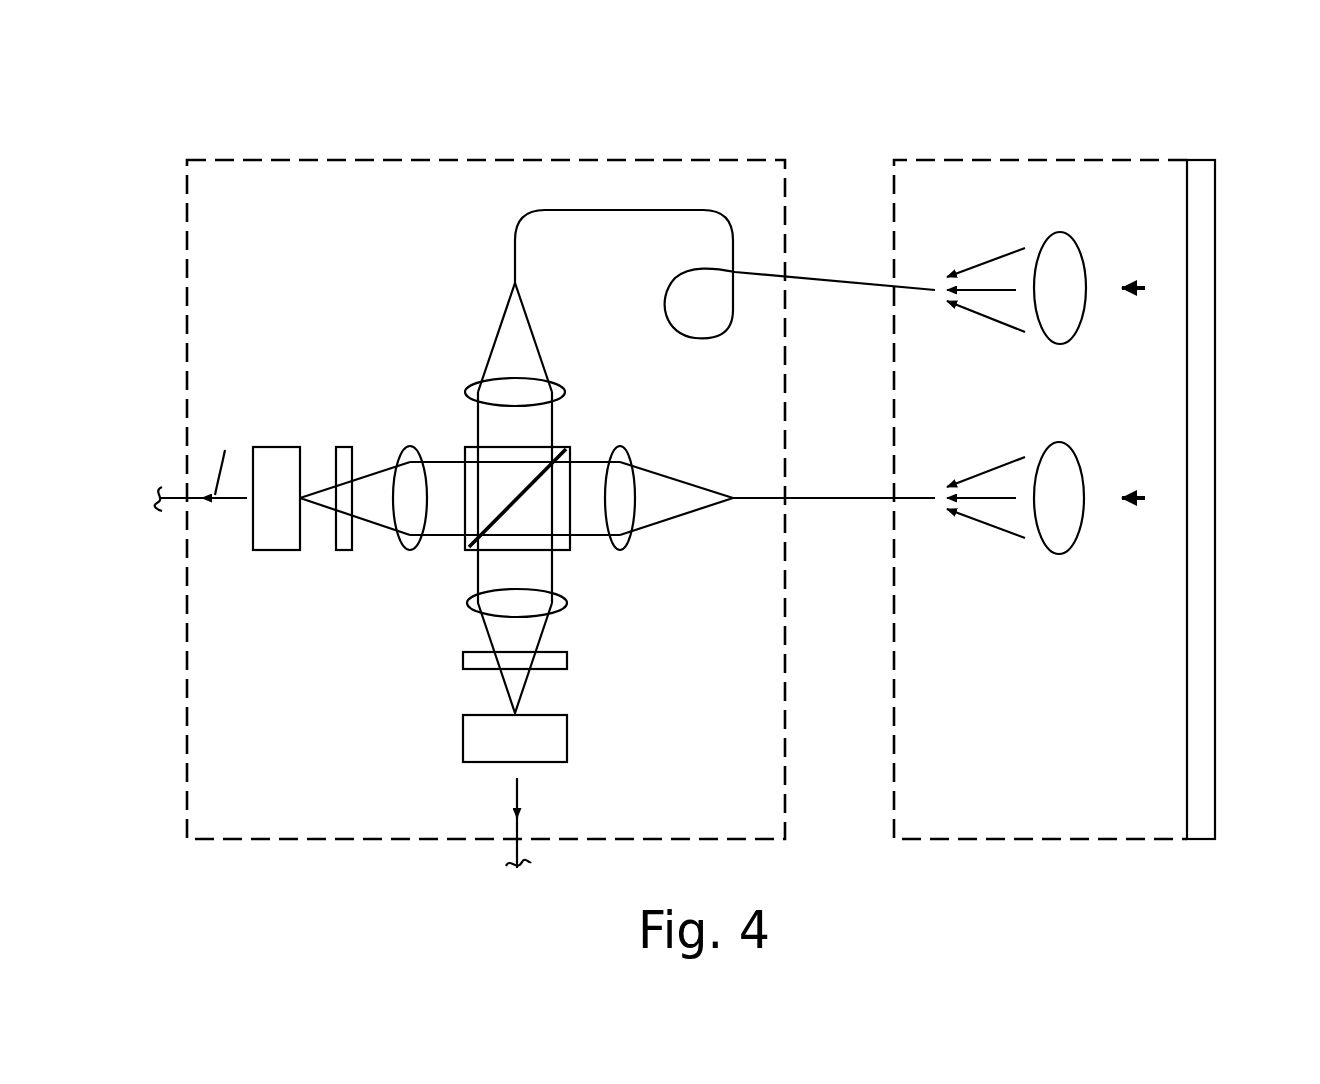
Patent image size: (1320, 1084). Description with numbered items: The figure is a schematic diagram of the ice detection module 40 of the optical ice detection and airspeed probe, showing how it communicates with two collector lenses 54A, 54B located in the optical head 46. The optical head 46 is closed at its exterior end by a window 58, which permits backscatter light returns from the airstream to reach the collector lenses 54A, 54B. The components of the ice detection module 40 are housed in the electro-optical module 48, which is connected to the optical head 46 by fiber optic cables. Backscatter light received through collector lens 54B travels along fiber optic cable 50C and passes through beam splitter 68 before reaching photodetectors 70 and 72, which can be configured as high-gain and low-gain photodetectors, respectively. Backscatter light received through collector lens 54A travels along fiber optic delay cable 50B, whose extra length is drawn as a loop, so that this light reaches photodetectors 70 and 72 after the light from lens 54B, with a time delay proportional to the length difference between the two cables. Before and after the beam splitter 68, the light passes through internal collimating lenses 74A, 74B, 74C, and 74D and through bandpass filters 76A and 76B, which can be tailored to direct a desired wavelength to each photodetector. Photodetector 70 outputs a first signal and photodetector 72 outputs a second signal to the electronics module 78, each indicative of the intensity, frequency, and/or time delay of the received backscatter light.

The ice detection module 40 is at (381, 298).
The optical head 46 is at (1052, 132).
The electro-optical module 48 is at (435, 132).
The fiber optic delay cable 50B is at (818, 277).
The fiber optic cable 50C is at (812, 497).
The collector lens 54A is at (1068, 236).
The collector lens 54B is at (1068, 446).
The window 58 is at (1215, 628).
The beam splitter 68 is at (571, 446).
The photodetector 70 is at (567, 738).
The photodetector 72 is at (276, 550).
The internal collimating lens 74A is at (563, 393).
The internal collimating lens 74B is at (563, 600).
The internal collimating lens 74C is at (630, 453).
The internal collimating lens 74D is at (410, 446).
The bandpass filter 76A is at (567, 660).
The bandpass filter 76B is at (343, 550).
The electronics module 78 is at (339, 661).